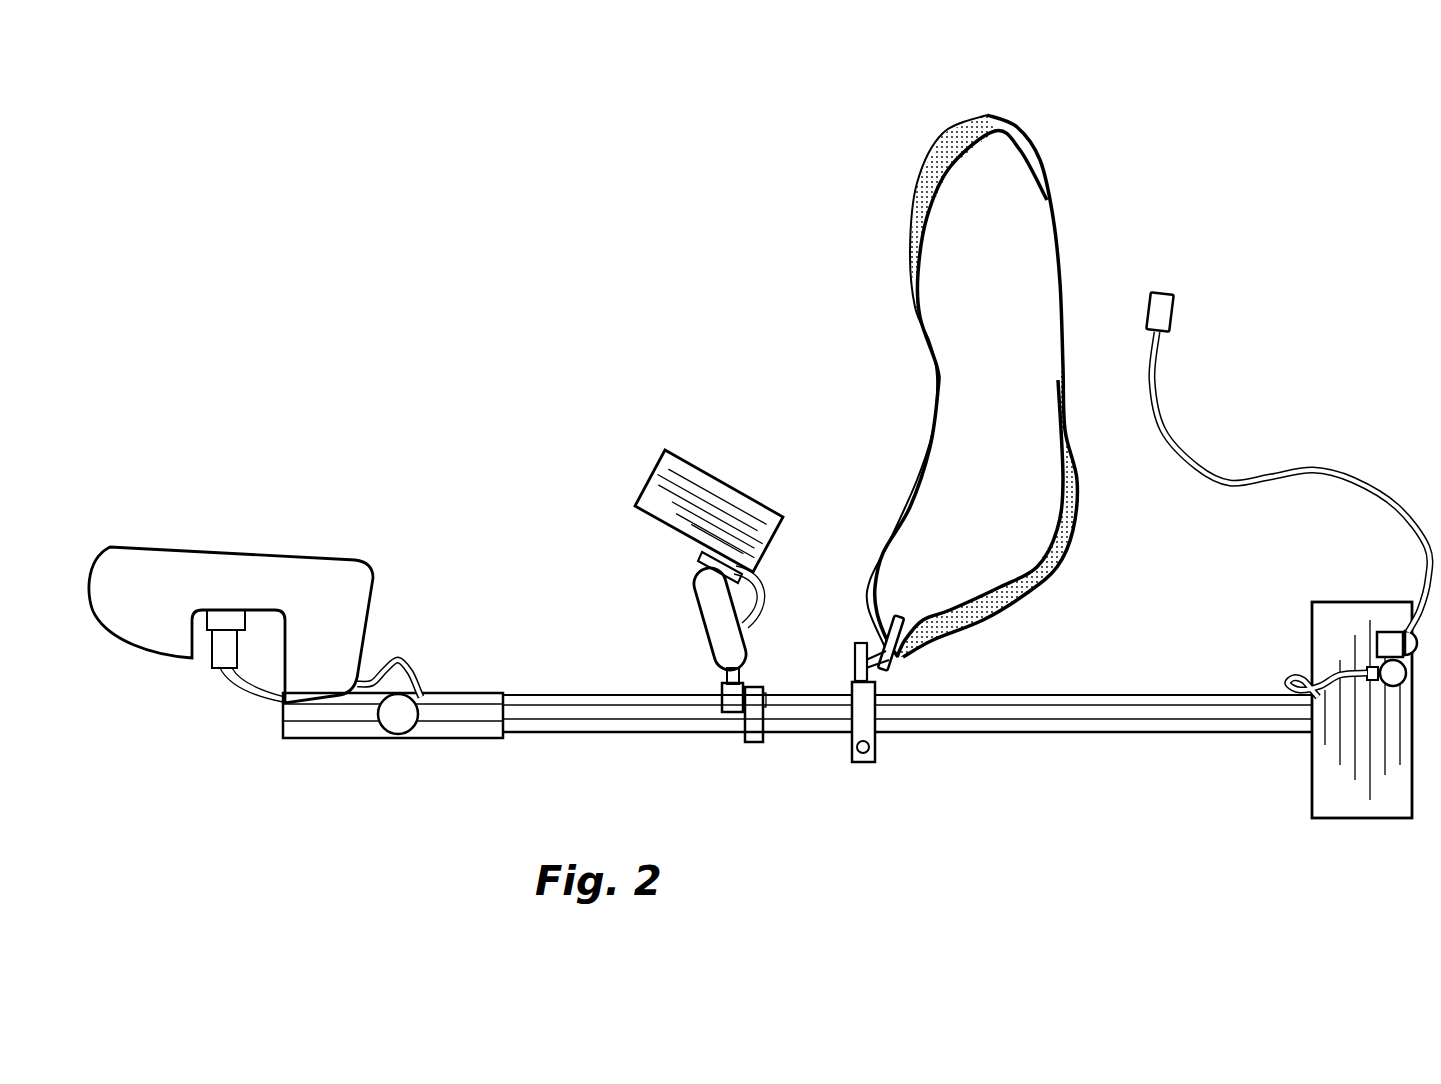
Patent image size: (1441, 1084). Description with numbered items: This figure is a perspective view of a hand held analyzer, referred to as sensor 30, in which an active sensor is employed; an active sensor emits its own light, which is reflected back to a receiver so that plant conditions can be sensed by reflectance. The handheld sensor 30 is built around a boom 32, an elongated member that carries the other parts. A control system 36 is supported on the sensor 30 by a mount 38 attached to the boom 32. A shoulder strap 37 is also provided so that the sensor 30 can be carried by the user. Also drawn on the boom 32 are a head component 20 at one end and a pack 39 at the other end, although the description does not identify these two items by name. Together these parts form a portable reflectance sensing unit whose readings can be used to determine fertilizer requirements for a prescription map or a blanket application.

The headrest 20 is at (255, 548).
The handheld sensor 30 is at (453, 437).
The boom 32 is at (1115, 722).
The control system 36 is at (698, 480).
The shoulder strap 37 is at (1047, 173).
The mount 38 is at (732, 650).
The battery pack 39 is at (1347, 790).